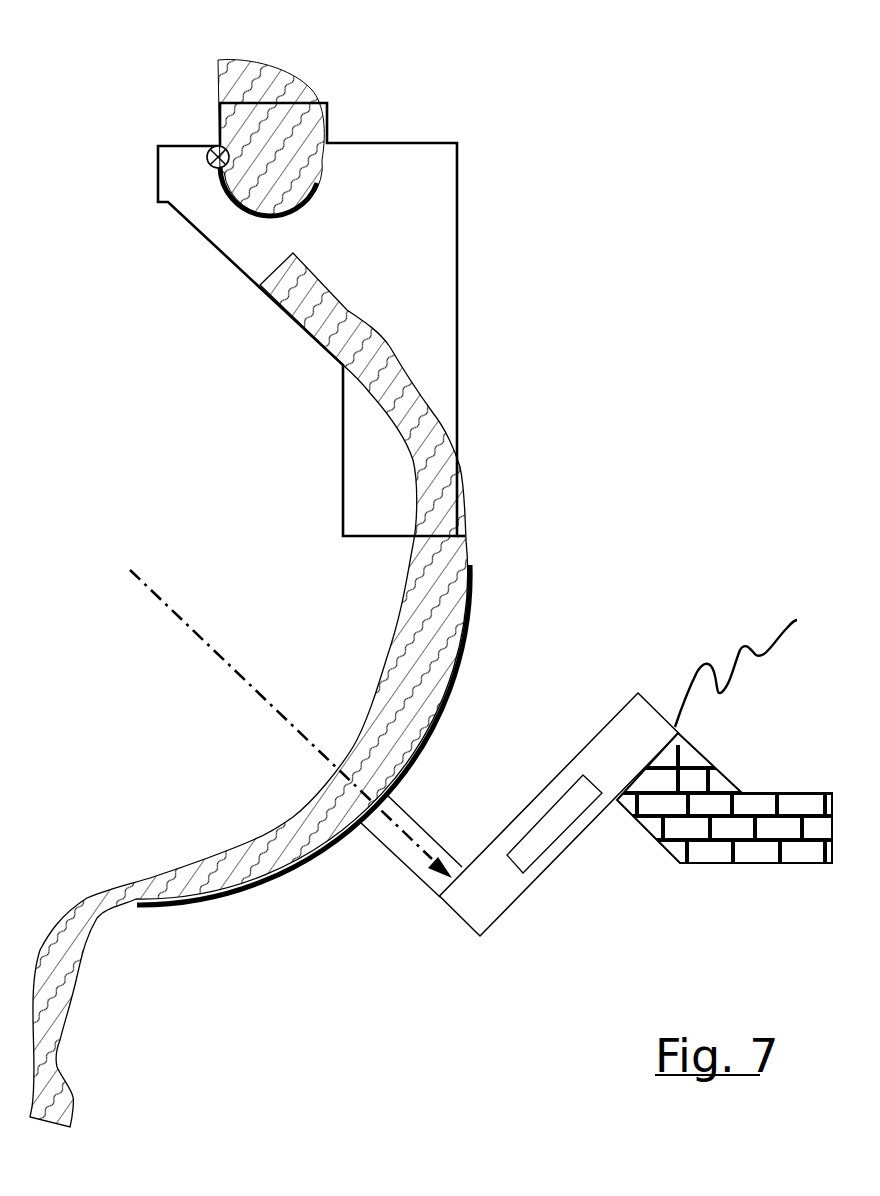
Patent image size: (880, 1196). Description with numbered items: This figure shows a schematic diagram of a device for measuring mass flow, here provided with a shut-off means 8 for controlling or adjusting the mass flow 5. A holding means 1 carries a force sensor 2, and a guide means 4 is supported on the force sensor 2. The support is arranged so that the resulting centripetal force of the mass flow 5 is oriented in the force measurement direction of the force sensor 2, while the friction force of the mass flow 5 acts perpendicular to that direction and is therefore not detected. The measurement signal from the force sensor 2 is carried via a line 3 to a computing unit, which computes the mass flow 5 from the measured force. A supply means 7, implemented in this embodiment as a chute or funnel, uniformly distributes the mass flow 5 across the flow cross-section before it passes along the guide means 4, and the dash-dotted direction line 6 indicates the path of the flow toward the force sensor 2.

The holding means 1 is at (720, 819).
The force sensor 2 is at (519, 814).
The line 3 is at (736, 656).
The guide means 4 is at (303, 748).
The mass flow 5 is at (249, 593).
The feed direction line 6 is at (291, 724).
The supply means 7 is at (311, 319).
The shut-off means 8 is at (208, 173).